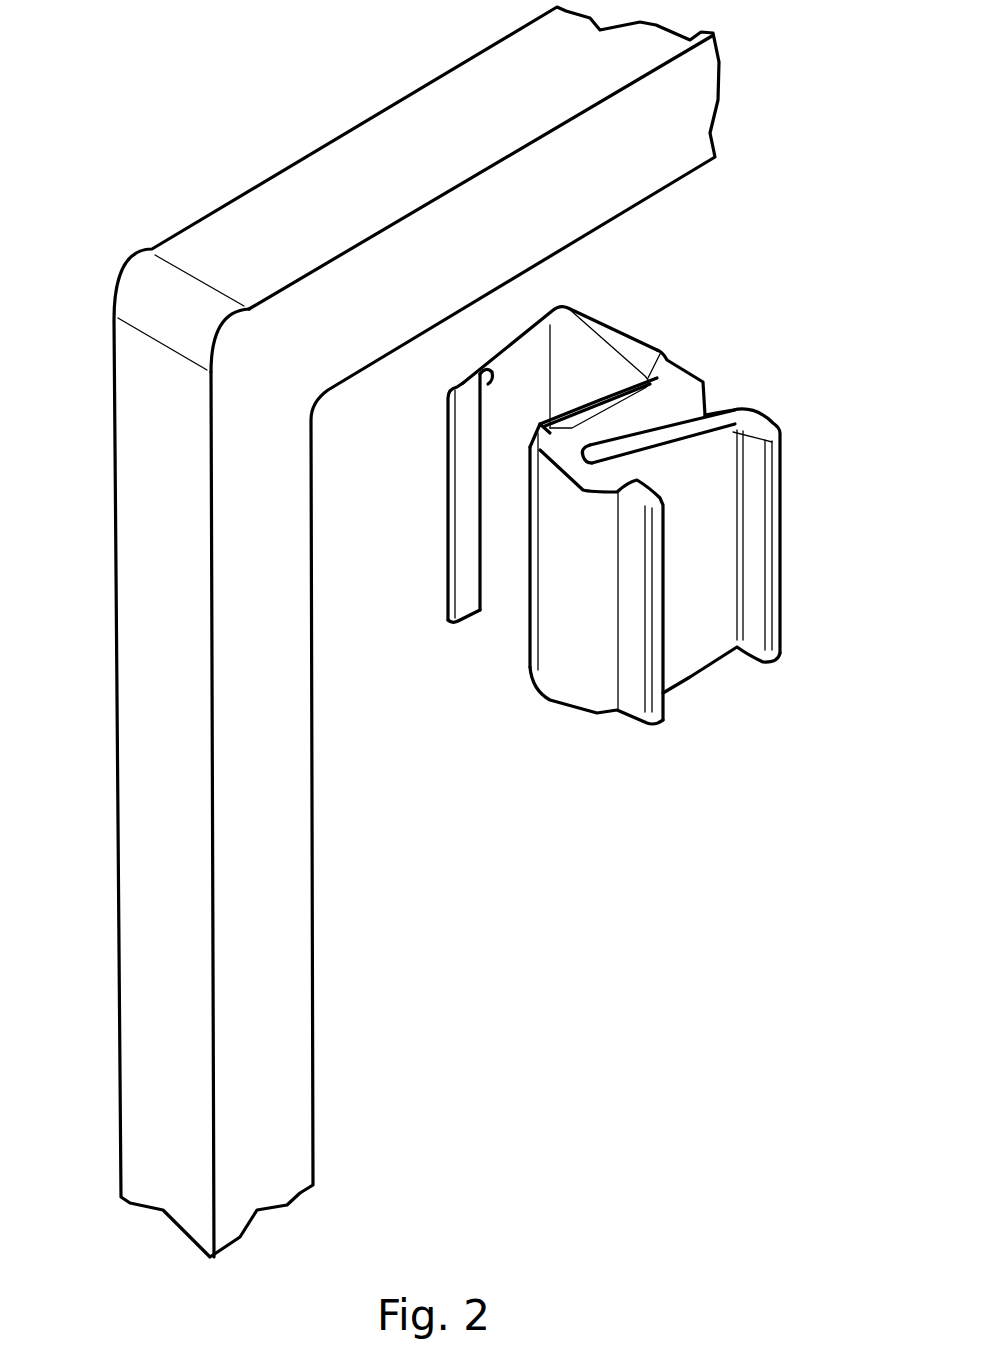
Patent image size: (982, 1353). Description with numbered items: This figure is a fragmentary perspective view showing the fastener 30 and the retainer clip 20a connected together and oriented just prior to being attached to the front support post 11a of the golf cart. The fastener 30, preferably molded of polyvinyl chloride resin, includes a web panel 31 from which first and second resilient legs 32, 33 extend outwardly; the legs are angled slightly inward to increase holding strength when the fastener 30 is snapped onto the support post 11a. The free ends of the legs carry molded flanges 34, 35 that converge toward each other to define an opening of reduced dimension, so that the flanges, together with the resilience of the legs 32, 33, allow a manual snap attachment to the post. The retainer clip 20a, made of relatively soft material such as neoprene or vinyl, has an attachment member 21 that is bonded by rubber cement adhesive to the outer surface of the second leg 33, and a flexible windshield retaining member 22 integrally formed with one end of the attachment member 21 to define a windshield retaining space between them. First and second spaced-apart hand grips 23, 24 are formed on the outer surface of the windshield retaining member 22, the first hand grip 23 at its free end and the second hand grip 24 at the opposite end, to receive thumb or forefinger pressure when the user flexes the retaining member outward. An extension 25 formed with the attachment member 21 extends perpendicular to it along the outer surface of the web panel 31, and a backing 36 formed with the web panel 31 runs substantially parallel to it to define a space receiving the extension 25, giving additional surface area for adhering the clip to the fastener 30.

The front support post 11a is at (140, 743).
The retainer clip 20a is at (711, 560).
The attachment member 21 is at (713, 400).
The windshield retaining member 22 is at (720, 655).
The first hand grip 23 is at (775, 537).
The second hand grip 24 is at (647, 727).
The extension 25 is at (662, 372).
The fastener 30 is at (547, 494).
The web panel 31 is at (568, 350).
The first resilient leg 32 is at (455, 375).
The second resilient leg 33 is at (652, 342).
The molded flange 34 is at (450, 454).
The molded flange 35 is at (530, 595).
The backing 36 is at (590, 332).